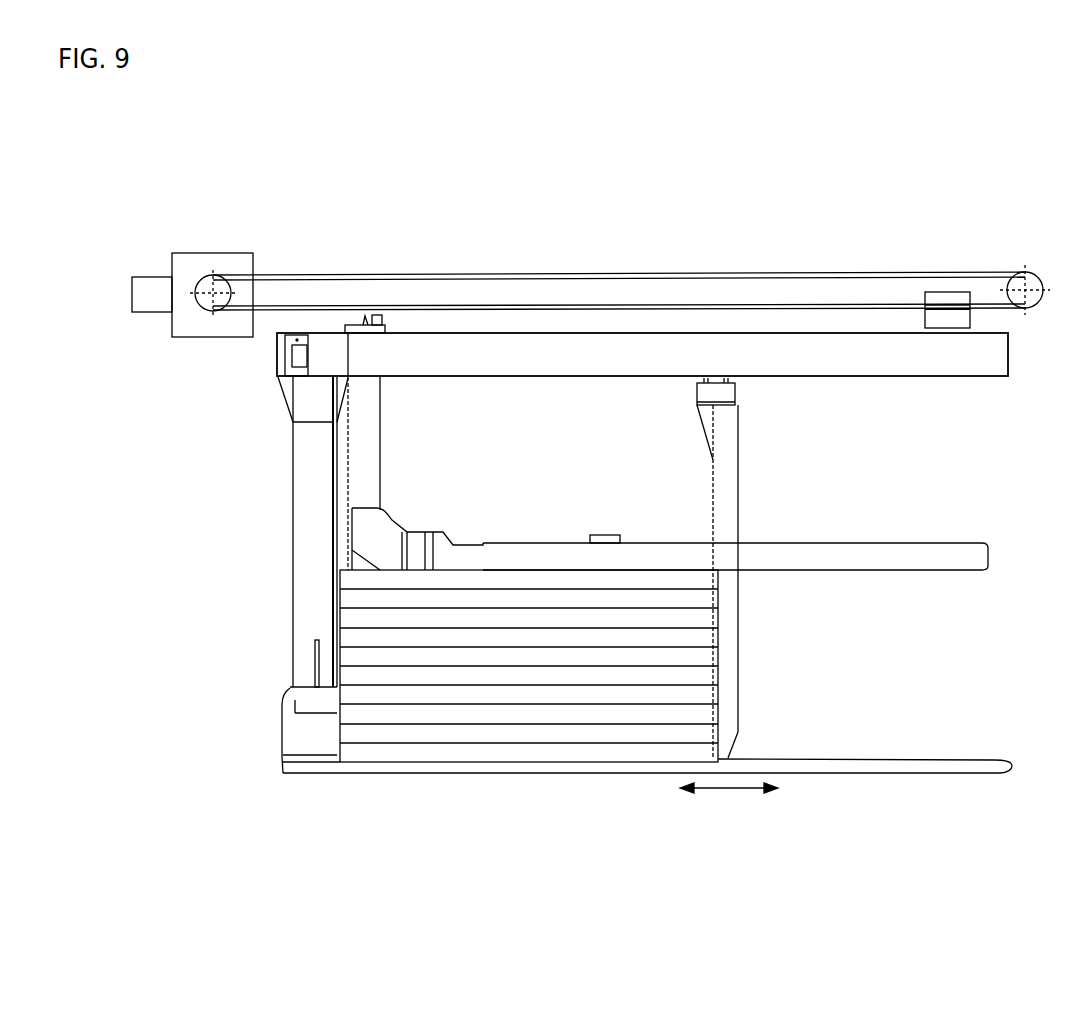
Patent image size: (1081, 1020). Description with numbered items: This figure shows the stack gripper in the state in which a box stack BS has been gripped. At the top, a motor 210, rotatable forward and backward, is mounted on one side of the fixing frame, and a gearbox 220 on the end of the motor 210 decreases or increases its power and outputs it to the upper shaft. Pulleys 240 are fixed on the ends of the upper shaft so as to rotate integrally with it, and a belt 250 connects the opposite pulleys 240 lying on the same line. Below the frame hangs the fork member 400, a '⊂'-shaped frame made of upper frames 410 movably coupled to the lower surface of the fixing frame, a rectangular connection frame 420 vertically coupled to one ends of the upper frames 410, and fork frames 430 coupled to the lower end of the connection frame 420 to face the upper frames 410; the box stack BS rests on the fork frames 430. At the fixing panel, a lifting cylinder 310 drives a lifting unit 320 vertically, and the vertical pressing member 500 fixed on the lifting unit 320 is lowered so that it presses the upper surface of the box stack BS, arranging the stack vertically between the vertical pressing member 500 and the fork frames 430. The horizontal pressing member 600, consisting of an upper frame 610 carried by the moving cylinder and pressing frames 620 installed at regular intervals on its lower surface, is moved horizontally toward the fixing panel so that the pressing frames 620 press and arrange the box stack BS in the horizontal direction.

The motor 210 is at (150, 277).
The gearbox 220 is at (210, 253).
The pulley 240 is at (213, 311).
The belt 250 is at (788, 272).
The lifting cylinder 310 is at (360, 458).
The lifting unit 320 is at (383, 537).
The fork member 400 is at (562, 544).
The upper frame 410 is at (467, 357).
The connection frame 420 is at (315, 545).
The fork frame 430 is at (283, 770).
The vertical pressing member 500 is at (933, 547).
The horizontal pressing member 600 is at (801, 568).
The upper frame 610 is at (735, 393).
The pressing frame 620 is at (843, 393).
The box stack BS is at (510, 753).